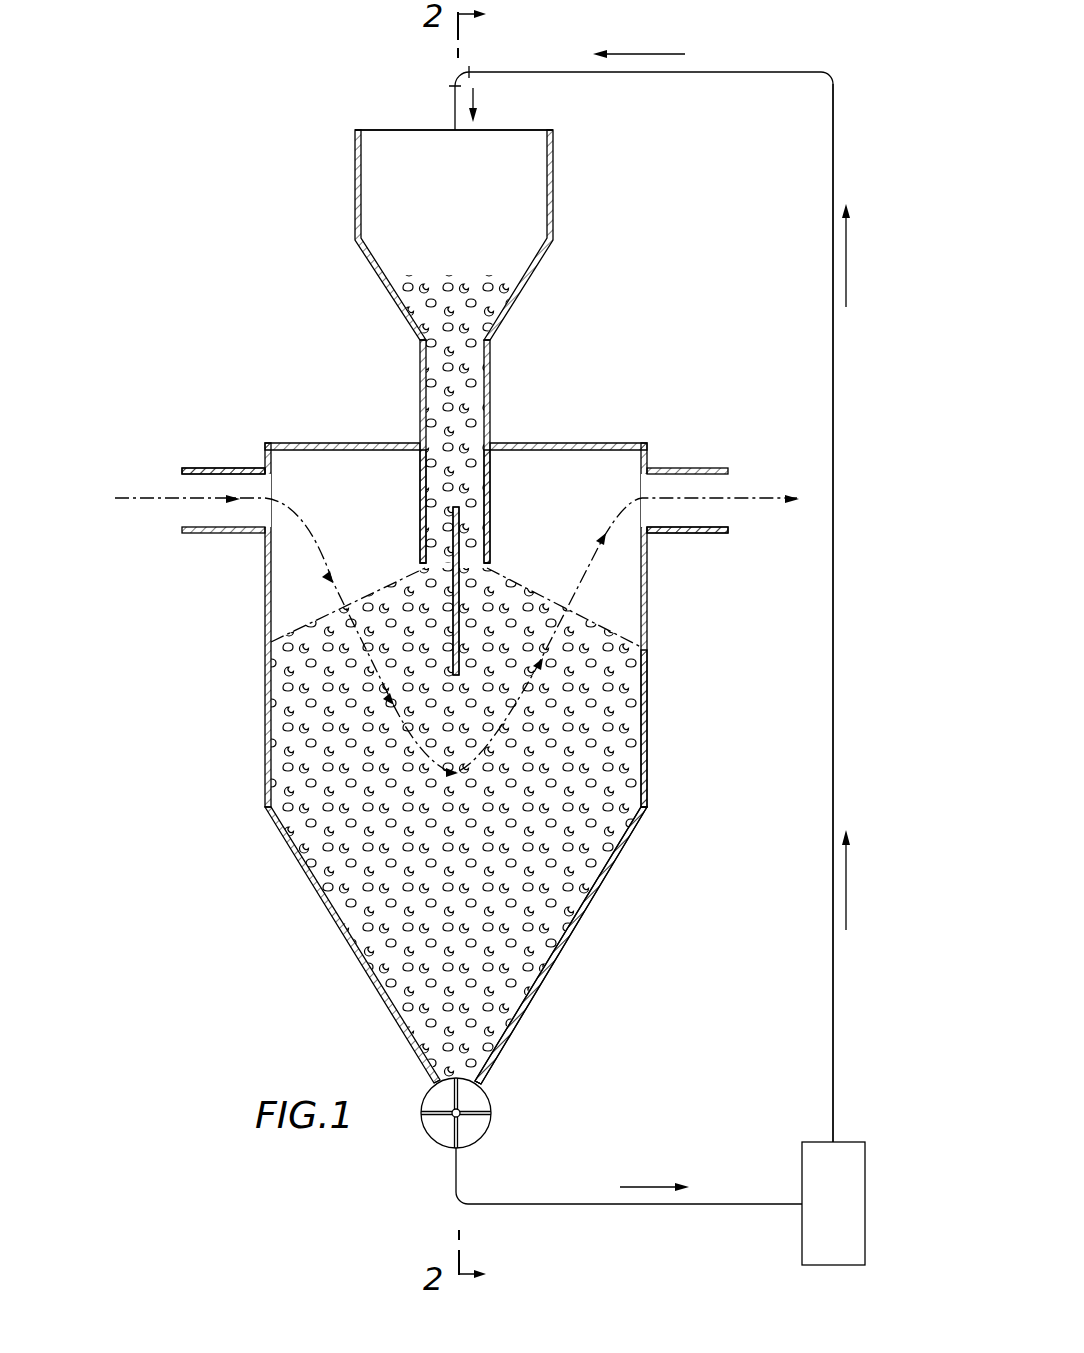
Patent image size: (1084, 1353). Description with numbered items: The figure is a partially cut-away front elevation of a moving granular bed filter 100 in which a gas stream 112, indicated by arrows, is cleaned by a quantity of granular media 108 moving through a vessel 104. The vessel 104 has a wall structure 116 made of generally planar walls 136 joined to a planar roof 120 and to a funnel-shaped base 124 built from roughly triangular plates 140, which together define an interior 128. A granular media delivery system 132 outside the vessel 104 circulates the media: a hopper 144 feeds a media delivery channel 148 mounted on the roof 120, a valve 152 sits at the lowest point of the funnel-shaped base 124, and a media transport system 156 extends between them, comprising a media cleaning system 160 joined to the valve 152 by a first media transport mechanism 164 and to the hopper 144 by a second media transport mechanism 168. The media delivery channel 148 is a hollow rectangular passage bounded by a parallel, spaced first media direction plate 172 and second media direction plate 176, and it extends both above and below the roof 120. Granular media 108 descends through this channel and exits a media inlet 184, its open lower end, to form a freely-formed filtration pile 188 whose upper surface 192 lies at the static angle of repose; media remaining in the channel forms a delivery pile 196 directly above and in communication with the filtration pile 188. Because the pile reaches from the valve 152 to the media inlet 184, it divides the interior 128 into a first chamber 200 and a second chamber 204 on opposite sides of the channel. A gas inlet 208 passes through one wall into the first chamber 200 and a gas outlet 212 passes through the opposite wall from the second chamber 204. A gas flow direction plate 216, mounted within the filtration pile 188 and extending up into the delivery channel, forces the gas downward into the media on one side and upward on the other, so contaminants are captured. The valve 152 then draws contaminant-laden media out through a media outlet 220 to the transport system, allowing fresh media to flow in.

The moving granular bed filter 100 is at (322, 321).
The vessel 104 is at (456, 735).
The granular media 108 is at (612, 698).
The gas stream 112 is at (305, 540).
The wall structure 116 is at (663, 598).
The roof 120 is at (566, 446).
The funnel-shaped base 124 is at (593, 947).
The interior 128 is at (540, 487).
The granular media delivery system 132 is at (849, 113).
The walls 136 is at (266, 548).
The plates 140 is at (332, 920).
The hopper 144 is at (553, 183).
The media delivery channel 148 is at (509, 382).
The valve 152 is at (488, 1136).
The media transport system 156 is at (852, 545).
The media cleaning system 160 is at (856, 1142).
The first media transport mechanism 164 is at (630, 1205).
The second media transport mechanism 168 is at (834, 414).
The first media direction plate 172 is at (420, 474).
The second media direction plate 176 is at (532, 536).
The media inlet 184 is at (438, 561).
The filtration pile 188 is at (402, 773).
The upper surface 192 is at (272, 642).
The delivery pile 196 is at (452, 488).
The first chamber 200 is at (333, 496).
The second chamber 204 is at (615, 493).
The gas inlet 208 is at (205, 485).
The gas outlet 212 is at (686, 485).
The gas flow direction plate 216 is at (462, 630).
The media outlet 220 is at (446, 1063).